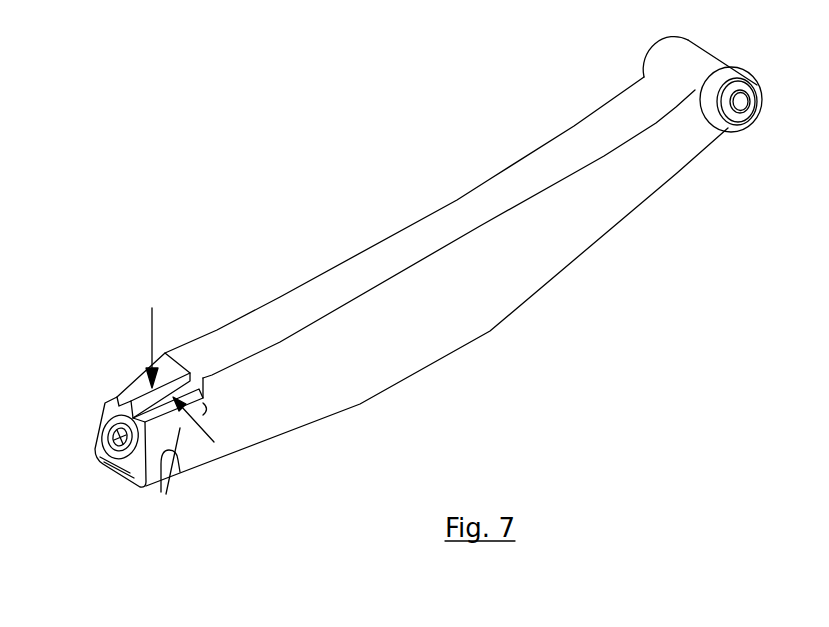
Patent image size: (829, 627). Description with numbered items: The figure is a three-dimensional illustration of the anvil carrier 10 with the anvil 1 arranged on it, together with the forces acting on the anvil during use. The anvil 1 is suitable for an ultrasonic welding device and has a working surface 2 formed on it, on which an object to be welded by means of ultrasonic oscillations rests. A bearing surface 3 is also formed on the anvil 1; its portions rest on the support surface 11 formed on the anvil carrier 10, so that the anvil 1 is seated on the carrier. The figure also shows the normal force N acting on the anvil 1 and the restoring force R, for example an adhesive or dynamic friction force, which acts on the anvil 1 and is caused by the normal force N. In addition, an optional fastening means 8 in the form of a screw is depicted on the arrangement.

The anvil 1 is at (148, 483).
The working surface 2 is at (135, 397).
The bearing surface 3 is at (166, 494).
The fastening means 8 is at (102, 440).
The anvil carrier 10 is at (418, 355).
The support surface 11 is at (180, 472).
The normal force N is at (152, 334).
The restoring force R is at (201, 431).